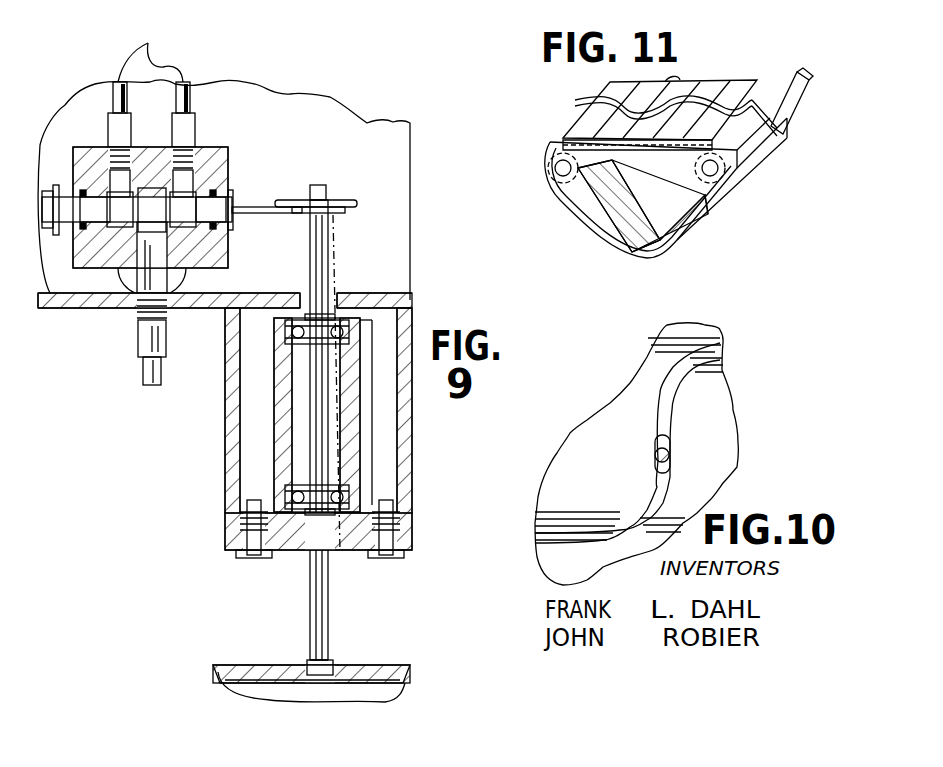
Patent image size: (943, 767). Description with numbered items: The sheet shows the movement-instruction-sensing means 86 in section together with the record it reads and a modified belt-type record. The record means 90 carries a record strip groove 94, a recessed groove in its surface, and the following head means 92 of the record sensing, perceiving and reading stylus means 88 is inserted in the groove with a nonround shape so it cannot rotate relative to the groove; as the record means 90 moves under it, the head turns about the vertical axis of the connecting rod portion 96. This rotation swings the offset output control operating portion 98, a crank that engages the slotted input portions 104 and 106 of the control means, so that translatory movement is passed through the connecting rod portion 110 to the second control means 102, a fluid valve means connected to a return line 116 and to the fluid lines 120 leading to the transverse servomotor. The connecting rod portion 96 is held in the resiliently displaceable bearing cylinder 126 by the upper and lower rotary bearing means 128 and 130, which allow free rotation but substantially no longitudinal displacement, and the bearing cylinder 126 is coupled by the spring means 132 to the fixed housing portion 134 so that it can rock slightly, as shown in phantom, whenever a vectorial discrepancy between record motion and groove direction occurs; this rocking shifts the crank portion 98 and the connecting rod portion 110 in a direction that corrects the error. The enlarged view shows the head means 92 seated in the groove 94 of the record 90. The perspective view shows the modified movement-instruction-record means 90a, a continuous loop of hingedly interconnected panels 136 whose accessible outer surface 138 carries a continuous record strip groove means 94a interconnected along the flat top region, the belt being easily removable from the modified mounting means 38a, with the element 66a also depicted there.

In FIG. 9, the movement-instruction-sensing means 86 is at (185, 448).
In FIG. 9, the record sensing, perceiving and reading stylus means 88 is at (328, 602).
In FIG. 9, the record means 90 is at (378, 665).
In FIG. 10, the record means 90 is at (700, 478).
In FIG. 9, the following head means 92 is at (328, 660).
In FIG. 10, the following head means 92 is at (667, 447).
In FIG. 9, the record strip groove 94 is at (308, 650).
In FIG. 10, the record strip groove 94 is at (672, 410).
In FIG. 9, the connecting rod portion 96 is at (310, 292).
In FIG. 9, the output control operating portion 98 is at (320, 184).
In FIG. 9, the second control means 102 is at (84, 326).
In FIG. 9, the input portion 104 is at (333, 200).
In FIG. 9, the input portion 106 is at (302, 222).
In FIG. 9, the connecting rod portion 110 is at (252, 206).
In FIG. 9, the return line 116 is at (142, 380).
In FIG. 9, the fluid lines 120 is at (151, 112).
In FIG. 9, the resiliently displaceable bearing cylinder 126 is at (372, 335).
In FIG. 9, the upper rotary bearing means 128 is at (337, 314).
In FIG. 9, the lower rotary bearing means 130 is at (296, 485).
In FIG. 9, the spring means 132 is at (240, 524).
In FIG. 9, the fixed housing portion 134 is at (410, 480).
In FIG. 11, the panels 136 is at (768, 74).
In FIG. 11, the outer surface 138 is at (588, 126).
In FIG. 11, the record strip groove means 94a is at (602, 110).
In FIG. 11, the rail 66a is at (800, 90).
In FIG. 11, the mounting means 38a is at (640, 195).
In FIG. 11, the movement-instruction-record means 90a is at (727, 206).